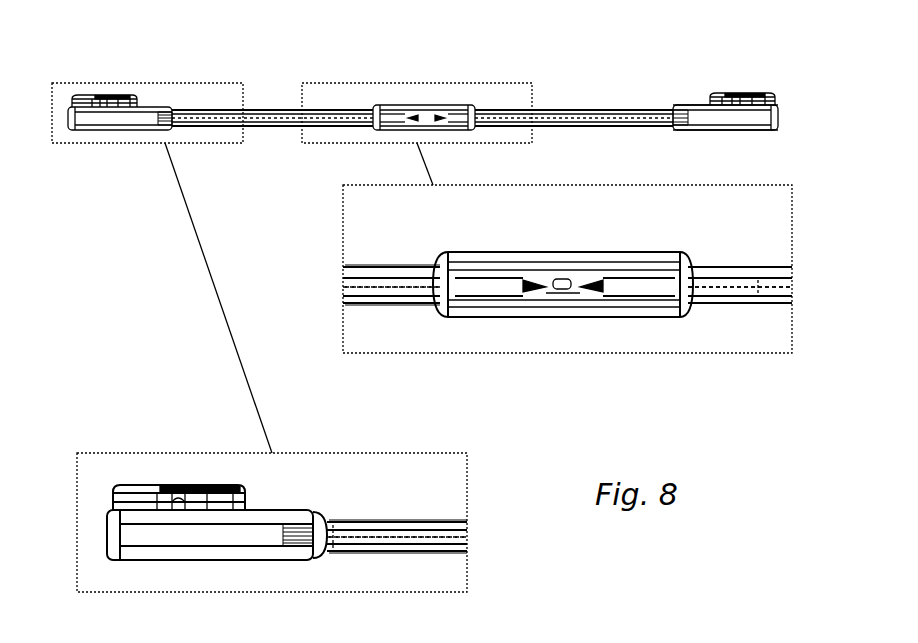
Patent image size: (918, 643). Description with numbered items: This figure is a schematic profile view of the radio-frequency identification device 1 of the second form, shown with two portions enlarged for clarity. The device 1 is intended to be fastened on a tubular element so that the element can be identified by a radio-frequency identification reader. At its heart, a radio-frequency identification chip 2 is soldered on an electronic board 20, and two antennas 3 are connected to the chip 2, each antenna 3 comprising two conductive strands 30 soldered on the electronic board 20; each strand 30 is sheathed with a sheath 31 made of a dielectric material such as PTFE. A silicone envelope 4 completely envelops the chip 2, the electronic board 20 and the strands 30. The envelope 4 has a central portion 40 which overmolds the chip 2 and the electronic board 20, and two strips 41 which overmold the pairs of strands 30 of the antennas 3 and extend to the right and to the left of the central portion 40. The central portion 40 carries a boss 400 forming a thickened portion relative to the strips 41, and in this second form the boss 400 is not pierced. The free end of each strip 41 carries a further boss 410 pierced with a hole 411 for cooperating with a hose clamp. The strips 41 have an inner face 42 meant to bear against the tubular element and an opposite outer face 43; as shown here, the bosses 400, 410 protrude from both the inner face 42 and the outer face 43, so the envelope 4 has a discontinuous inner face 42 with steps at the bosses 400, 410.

The radio-frequency identification device 1 is at (777, 85).
The radio-frequency identification chip 2 is at (565, 283).
The antenna 3 is at (343, 288).
The envelope 4 is at (778, 135).
The electronic board 20 is at (565, 296).
The conductive strand 30 is at (535, 284).
The sheath 31 is at (758, 292).
The central portion 40 is at (405, 100).
The strip 41 is at (268, 108).
The inner face 42 is at (368, 265).
The outer face 43 is at (368, 302).
The boss 400 is at (388, 128).
The boss 410 is at (98, 120).
The hole 411 is at (165, 490).